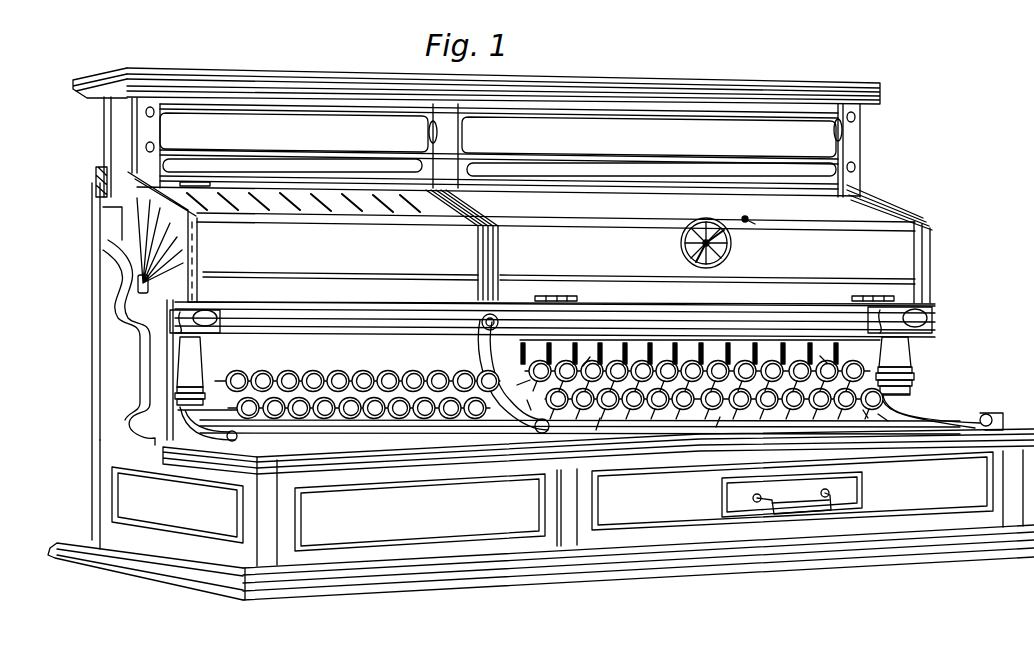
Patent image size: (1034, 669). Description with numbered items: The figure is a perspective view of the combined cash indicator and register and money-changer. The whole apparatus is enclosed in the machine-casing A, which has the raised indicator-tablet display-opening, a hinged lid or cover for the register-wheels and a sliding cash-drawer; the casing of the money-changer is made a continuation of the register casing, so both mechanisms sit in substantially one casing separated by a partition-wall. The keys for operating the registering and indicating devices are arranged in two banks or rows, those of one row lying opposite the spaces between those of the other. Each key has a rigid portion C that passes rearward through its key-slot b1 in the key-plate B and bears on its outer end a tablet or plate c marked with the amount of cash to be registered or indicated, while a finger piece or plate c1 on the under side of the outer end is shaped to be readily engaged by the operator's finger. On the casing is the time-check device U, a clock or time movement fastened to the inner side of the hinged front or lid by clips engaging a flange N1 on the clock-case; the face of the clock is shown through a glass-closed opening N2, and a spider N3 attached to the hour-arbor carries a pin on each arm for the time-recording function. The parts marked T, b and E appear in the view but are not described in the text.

The machine-casing A is at (541, 334).
The side frame bracket T is at (95, 331).
The time-check device U is at (697, 243).
The flange N1 is at (732, 240).
The glass-closed opening N2 is at (690, 259).
The spider N3 is at (757, 224).
The key-plate B is at (679, 353).
The key bar b is at (696, 362).
The key-slot b1 is at (691, 413).
The rigid portion of key C is at (834, 410).
The tablet or plate c is at (665, 369).
The finger piece or plate c1 is at (653, 429).
The release lever E is at (884, 415).